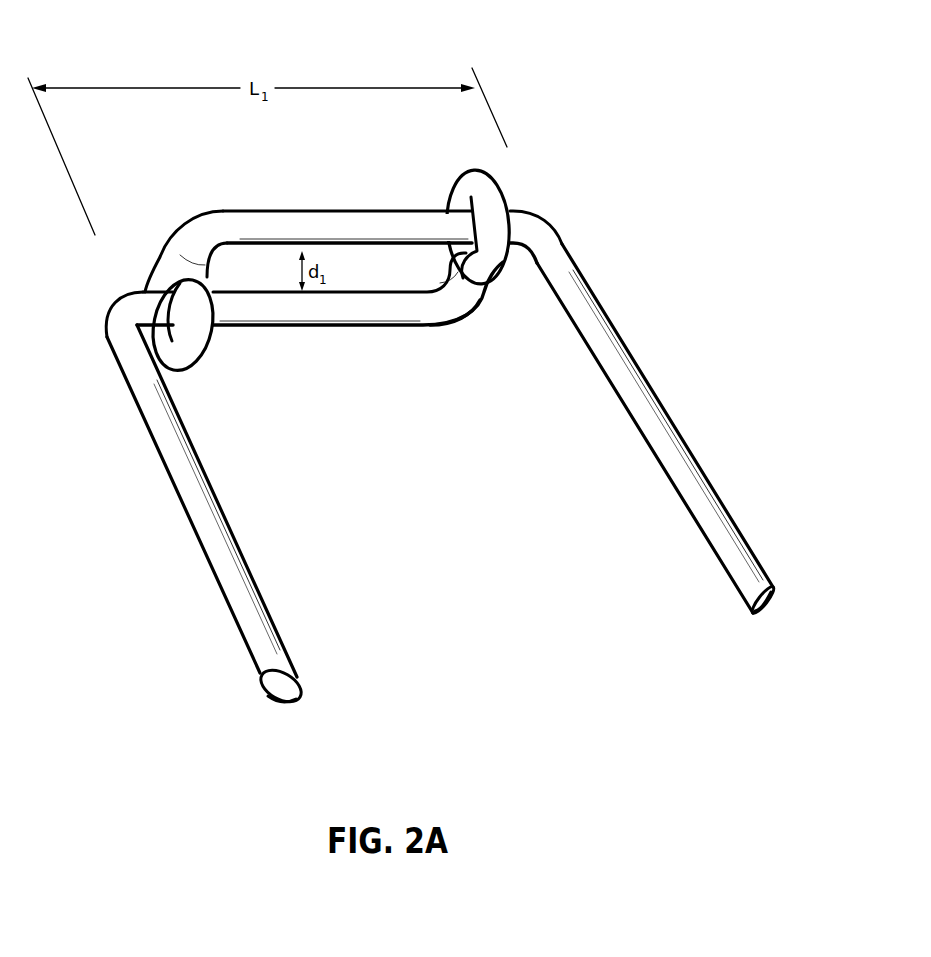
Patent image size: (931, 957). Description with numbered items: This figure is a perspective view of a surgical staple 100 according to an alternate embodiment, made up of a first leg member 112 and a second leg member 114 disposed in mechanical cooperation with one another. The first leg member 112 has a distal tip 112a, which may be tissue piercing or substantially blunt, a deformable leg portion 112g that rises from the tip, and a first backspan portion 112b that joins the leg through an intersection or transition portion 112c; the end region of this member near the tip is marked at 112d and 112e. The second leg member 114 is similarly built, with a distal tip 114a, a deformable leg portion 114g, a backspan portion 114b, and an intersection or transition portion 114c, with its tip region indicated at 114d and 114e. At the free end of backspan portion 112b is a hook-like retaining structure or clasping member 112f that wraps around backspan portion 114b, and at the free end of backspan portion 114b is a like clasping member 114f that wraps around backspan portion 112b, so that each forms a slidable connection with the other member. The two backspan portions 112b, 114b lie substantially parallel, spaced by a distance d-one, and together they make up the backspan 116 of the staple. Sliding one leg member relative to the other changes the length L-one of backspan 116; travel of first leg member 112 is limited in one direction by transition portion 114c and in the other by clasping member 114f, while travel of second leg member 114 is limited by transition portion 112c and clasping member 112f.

The surgical staple 100 is at (544, 57).
The first leg member 112 is at (220, 535).
The distal tip 112a is at (318, 682).
The first backspan portion 112b is at (340, 313).
The intersection or transition portion 112c is at (120, 312).
The first member end face 112d is at (273, 683).
The first member free end 112e is at (293, 703).
The retaining structure 112f is at (490, 183).
The deformable leg portion 112g is at (200, 480).
The second leg member 114 is at (672, 432).
The distal tip 114a is at (751, 640).
The first backspan portion 114b is at (340, 227).
The intersection or transition portion 114c is at (537, 223).
The second member end face 114d is at (773, 597).
The second member free end 114e is at (753, 617).
The retaining structure 114f is at (187, 357).
The deformable leg portion 114g is at (642, 412).
The backspan 116 is at (448, 344).